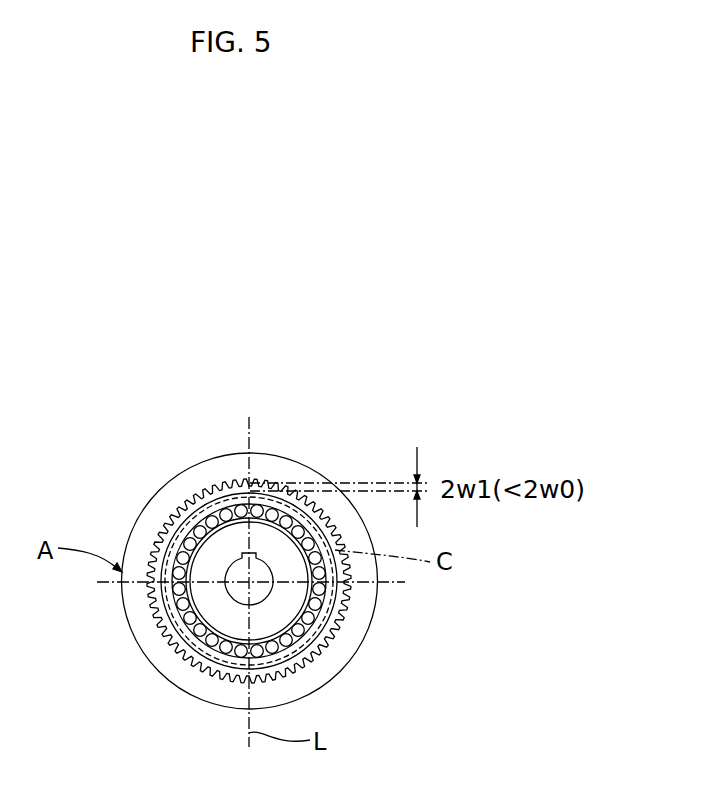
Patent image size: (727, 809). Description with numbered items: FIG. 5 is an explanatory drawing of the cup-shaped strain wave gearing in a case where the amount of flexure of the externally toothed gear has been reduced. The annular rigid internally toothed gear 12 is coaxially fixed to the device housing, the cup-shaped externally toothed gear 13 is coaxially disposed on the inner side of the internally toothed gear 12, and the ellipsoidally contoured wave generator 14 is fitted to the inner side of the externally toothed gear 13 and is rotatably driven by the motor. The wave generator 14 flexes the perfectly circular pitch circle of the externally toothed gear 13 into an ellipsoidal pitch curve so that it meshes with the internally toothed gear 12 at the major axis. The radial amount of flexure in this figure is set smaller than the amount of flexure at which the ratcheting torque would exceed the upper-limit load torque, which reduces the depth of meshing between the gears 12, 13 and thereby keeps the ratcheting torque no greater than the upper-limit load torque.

The rigid internally toothed gear 12 is at (182, 468).
The externally toothed gear 13 is at (170, 525).
The wave generator 14 is at (223, 617).